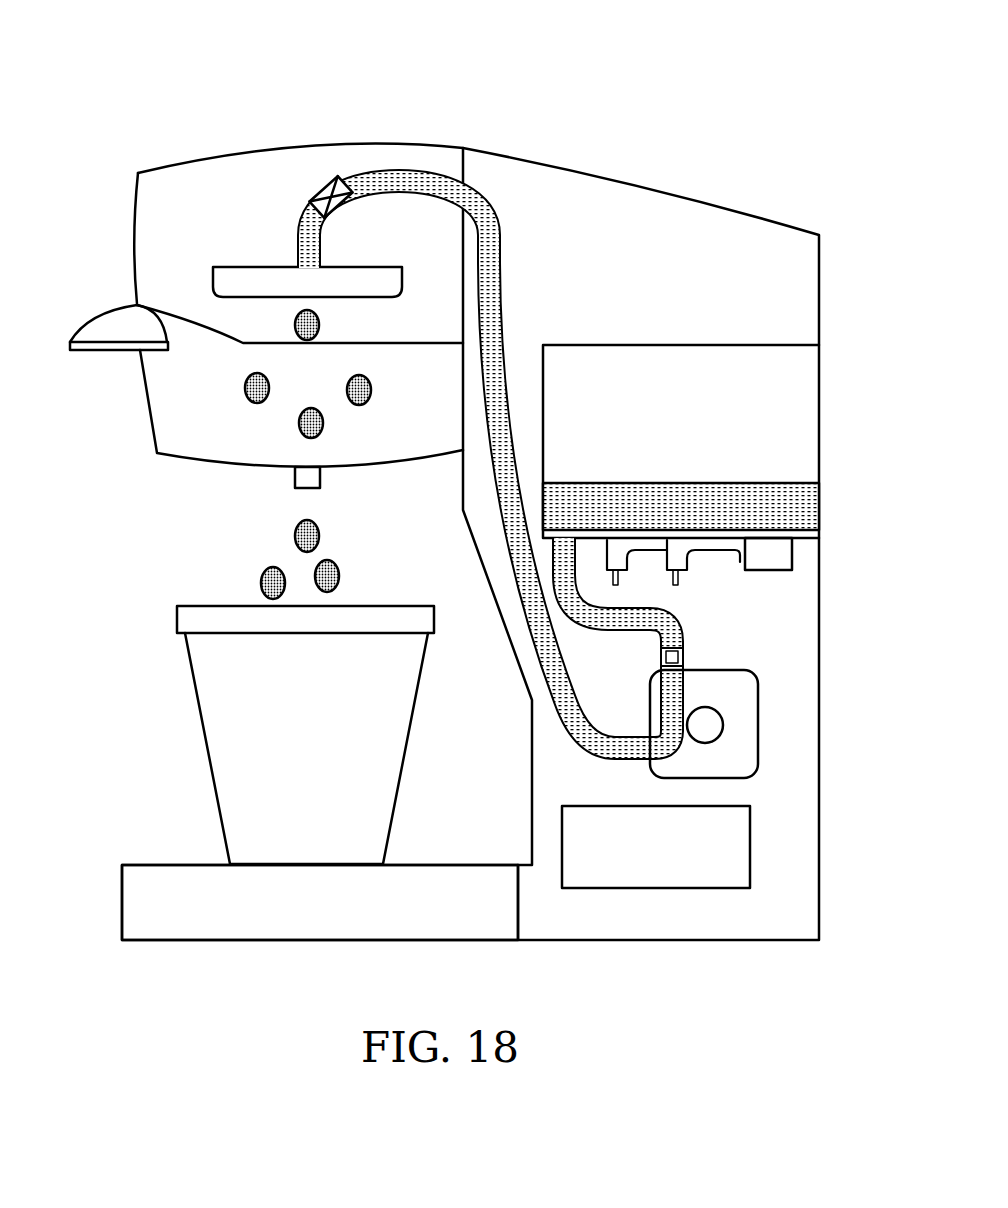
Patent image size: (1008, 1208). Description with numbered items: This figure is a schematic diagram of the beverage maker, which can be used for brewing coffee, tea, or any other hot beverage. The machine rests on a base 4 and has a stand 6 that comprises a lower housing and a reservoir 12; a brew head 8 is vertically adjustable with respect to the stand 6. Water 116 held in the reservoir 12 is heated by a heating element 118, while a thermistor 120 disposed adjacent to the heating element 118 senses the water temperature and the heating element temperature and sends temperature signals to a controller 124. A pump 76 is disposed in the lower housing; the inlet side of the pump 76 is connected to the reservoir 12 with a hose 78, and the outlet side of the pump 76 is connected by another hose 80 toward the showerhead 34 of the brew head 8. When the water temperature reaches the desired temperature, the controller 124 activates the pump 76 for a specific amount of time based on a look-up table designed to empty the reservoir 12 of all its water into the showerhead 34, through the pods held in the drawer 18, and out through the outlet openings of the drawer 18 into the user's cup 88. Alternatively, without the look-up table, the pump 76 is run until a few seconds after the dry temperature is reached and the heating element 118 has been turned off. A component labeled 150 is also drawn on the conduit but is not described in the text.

The base 4 is at (190, 926).
The stand 6 is at (695, 186).
The brew head 8 is at (410, 106).
The reservoir 12 is at (742, 370).
The drawer 18 is at (147, 418).
The showerhead 34 is at (233, 266).
The pump 76 is at (750, 723).
The hose 78 is at (617, 631).
The hose 80 is at (514, 570).
The cup 88 is at (207, 752).
The water 116 is at (753, 487).
The heating element 118 is at (712, 552).
The thermistor 120 is at (785, 558).
The controller 124 is at (668, 890).
The check valve 150 is at (322, 180).